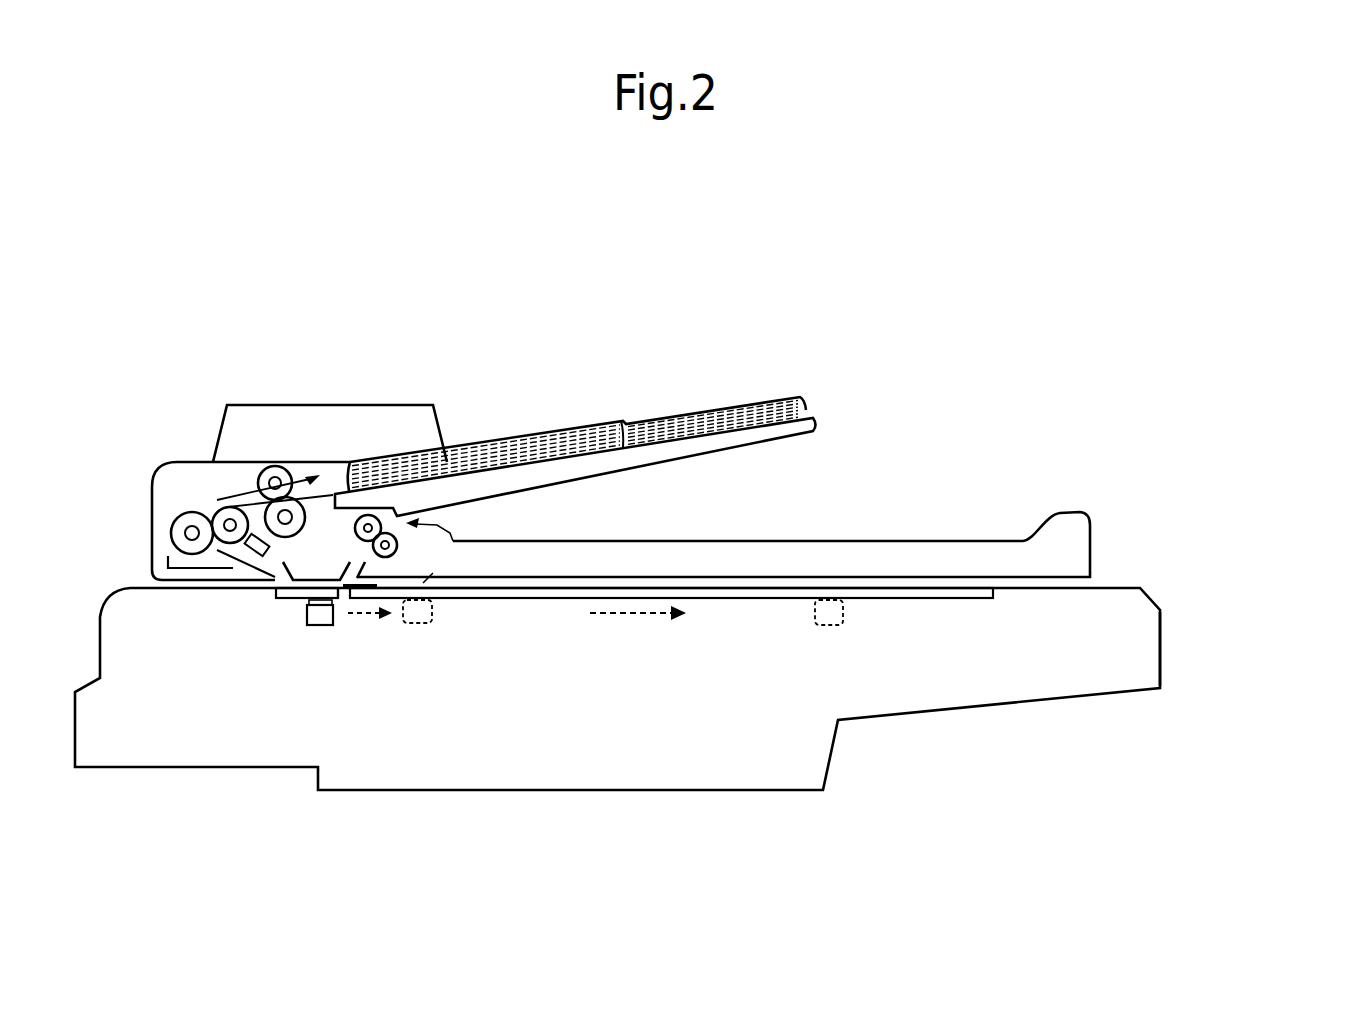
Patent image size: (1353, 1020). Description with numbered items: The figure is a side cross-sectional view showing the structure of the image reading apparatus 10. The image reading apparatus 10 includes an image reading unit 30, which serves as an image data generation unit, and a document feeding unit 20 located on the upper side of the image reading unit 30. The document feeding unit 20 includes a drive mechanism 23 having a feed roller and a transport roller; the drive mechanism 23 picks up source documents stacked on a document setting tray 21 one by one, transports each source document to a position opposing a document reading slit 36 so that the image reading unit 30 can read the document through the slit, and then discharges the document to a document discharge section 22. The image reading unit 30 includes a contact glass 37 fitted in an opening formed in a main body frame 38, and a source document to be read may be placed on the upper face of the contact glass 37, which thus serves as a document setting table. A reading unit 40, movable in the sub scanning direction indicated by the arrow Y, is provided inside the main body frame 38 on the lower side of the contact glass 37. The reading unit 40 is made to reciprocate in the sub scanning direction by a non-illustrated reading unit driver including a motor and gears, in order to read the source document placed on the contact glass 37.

The image reading apparatus 10 is at (1239, 459).
The document feeding unit 20 is at (1103, 522).
The document setting tray 21 is at (811, 420).
The document discharge section 22 is at (907, 540).
The drive mechanism 23 is at (183, 490).
The image reading unit 30 is at (1157, 591).
The document reading slit 36 is at (277, 597).
The contact glass 37 is at (695, 584).
The main body frame 38 is at (1161, 647).
The reading unit 40 is at (304, 625).